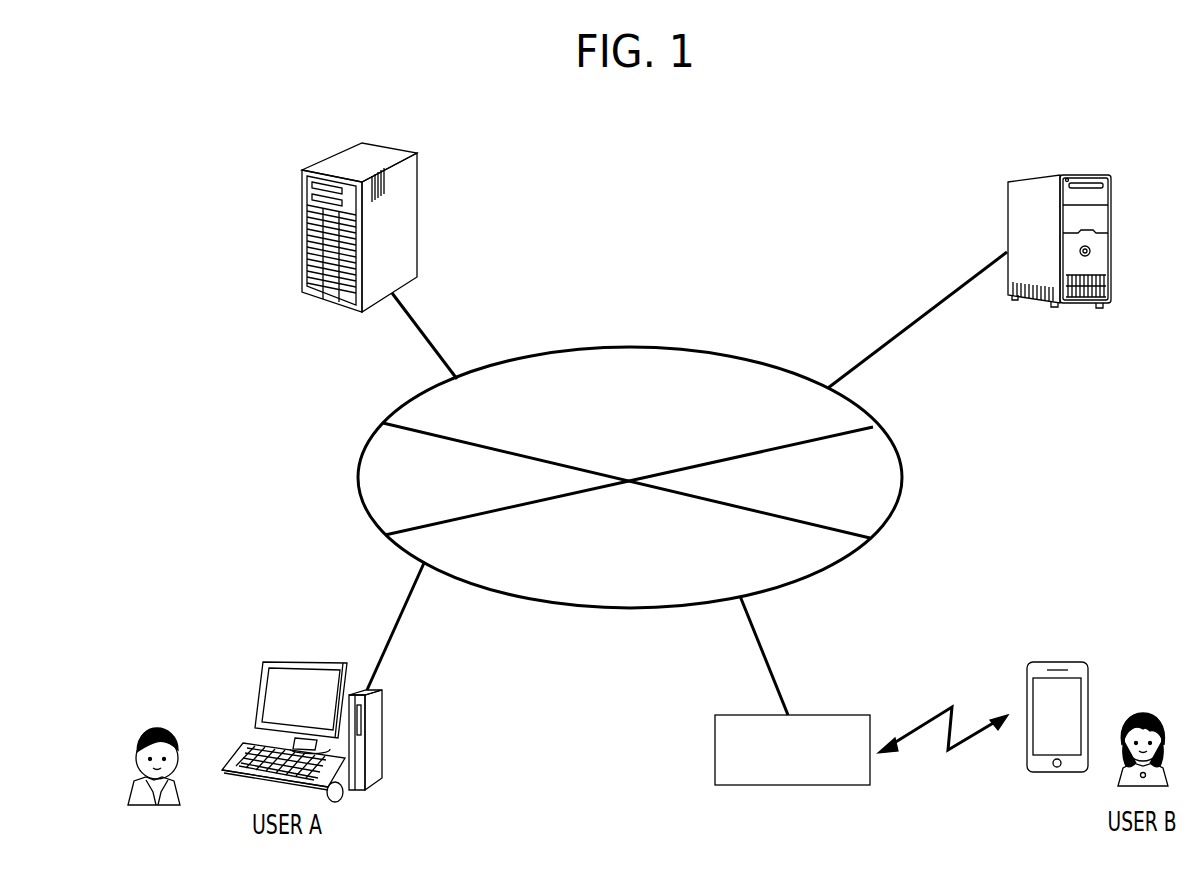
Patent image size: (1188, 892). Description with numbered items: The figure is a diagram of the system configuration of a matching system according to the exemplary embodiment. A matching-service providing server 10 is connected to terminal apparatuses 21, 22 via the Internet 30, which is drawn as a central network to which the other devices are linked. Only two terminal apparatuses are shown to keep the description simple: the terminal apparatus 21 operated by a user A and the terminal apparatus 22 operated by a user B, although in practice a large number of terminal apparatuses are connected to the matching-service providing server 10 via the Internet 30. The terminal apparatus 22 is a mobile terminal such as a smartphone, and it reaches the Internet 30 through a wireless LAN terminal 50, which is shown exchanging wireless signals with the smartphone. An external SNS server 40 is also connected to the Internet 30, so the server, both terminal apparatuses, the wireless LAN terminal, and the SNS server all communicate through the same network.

The matching-service providing server 10 is at (302, 200).
The terminal apparatus 21 is at (370, 723).
The terminal apparatus 22 is at (1058, 661).
The Internet 30 is at (634, 346).
The external SNS server 40 is at (1079, 173).
The wireless LAN terminal 50 is at (715, 740).